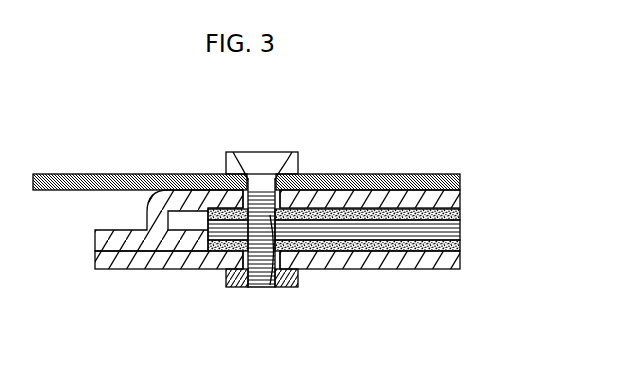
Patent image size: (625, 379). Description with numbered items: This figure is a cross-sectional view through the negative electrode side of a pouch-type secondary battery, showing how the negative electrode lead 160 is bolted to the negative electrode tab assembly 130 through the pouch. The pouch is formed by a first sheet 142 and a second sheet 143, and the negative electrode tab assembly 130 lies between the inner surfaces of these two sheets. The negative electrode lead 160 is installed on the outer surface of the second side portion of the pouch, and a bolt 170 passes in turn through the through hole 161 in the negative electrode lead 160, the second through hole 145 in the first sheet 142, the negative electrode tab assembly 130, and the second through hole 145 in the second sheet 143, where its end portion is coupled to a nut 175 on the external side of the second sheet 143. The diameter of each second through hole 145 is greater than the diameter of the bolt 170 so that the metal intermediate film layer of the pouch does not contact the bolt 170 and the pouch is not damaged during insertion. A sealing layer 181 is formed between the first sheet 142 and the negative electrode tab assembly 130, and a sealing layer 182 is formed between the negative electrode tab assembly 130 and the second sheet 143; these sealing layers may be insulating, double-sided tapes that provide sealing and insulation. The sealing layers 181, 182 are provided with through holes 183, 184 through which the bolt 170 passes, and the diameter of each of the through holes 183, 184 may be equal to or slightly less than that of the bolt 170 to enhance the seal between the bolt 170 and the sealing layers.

The negative electrode tab assembly 130 is at (200, 227).
The first sheet 142 is at (96, 238).
The second sheet 143 is at (100, 258).
The second through hole 145 is at (234, 153).
The negative electrode lead 160 is at (80, 184).
The through hole 161 is at (273, 168).
The bolt 170 is at (261, 157).
The nut 175 is at (233, 288).
The sealing layer 181 is at (326, 202).
The sealing layer 182 is at (323, 257).
The through hole 183 is at (294, 242).
The through hole 184 is at (271, 287).